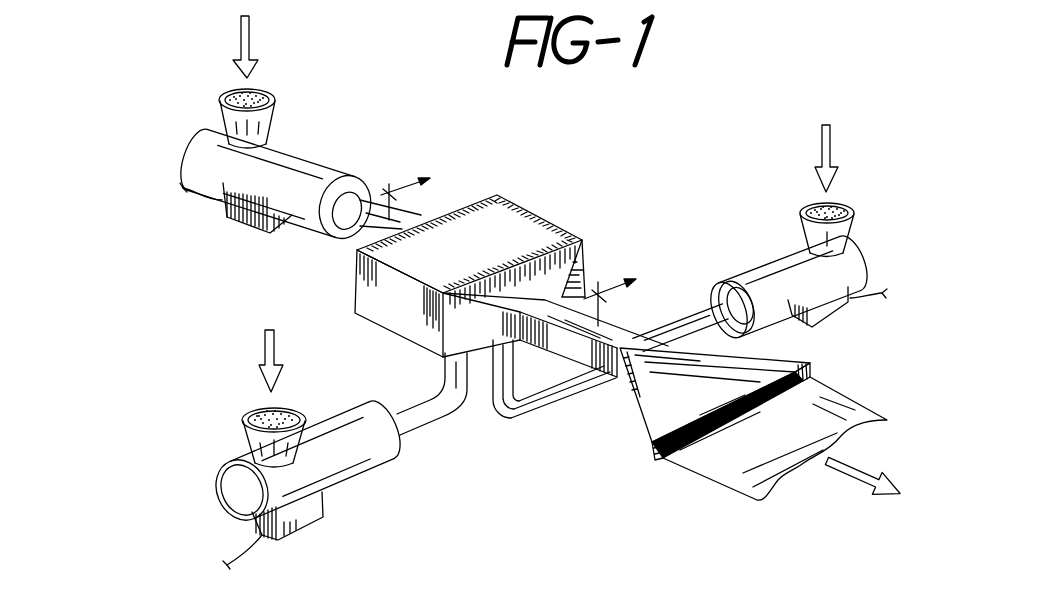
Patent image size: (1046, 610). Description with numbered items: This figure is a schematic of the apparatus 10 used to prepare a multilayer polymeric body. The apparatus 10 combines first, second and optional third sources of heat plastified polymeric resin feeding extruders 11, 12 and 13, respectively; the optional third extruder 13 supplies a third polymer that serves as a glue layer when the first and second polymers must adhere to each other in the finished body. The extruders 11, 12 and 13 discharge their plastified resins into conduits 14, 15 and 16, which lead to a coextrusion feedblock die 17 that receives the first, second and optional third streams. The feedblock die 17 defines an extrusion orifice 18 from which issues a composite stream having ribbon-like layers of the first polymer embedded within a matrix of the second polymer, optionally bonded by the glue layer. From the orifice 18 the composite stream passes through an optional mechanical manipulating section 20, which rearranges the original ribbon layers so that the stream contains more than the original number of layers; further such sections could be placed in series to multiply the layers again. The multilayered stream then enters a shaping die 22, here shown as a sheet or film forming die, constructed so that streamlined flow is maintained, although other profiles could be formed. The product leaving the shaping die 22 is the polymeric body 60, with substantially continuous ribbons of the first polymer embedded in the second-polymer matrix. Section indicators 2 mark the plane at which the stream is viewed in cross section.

The section line 2-2 indicator 2 is at (508, 241).
The apparatus 10 is at (461, 120).
The first extruder 11 is at (297, 160).
The second extruder 12 is at (342, 440).
The third extruder 13 is at (770, 272).
The first conduit 14 is at (345, 215).
The second conduit 15 is at (435, 376).
The third conduit 16 is at (556, 395).
The coextrusion feedblock die 17 is at (530, 218).
The extrusion orifice 18 is at (548, 326).
The mechanical manipulating section 20 is at (632, 333).
The shaping die 22 is at (638, 432).
The polymeric body 60 is at (818, 400).